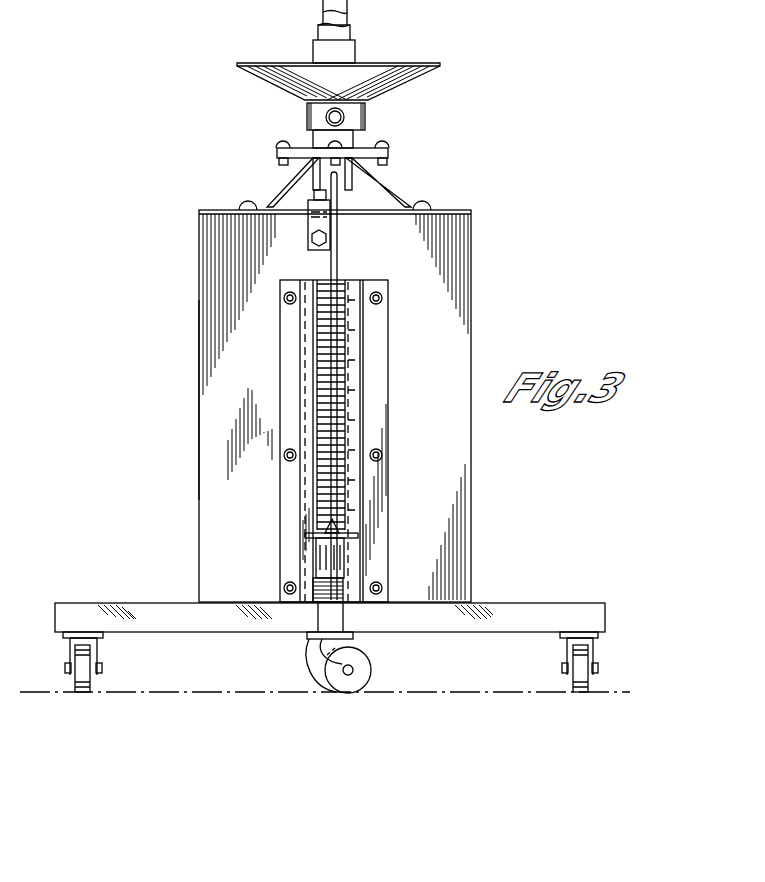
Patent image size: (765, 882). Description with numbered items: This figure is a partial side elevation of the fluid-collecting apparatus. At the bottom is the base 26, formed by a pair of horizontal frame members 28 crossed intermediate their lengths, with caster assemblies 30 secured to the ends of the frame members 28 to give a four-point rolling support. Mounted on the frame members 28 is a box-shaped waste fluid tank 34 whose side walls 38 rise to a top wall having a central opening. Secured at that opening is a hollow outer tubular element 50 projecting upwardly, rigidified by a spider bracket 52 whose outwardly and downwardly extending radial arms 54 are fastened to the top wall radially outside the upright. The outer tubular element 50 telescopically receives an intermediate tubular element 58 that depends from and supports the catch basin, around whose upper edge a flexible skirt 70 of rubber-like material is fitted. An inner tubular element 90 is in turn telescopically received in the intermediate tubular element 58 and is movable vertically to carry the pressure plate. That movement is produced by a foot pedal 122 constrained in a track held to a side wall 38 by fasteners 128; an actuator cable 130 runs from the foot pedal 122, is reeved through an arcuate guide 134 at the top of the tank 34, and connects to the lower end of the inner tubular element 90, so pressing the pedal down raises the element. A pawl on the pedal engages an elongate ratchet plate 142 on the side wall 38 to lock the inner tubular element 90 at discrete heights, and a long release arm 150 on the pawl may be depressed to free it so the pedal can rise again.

The base 26 is at (414, 637).
The horizontal frame members 28 is at (318, 622).
The caster assemblies 30 is at (88, 693).
The waste fluid tank 34 is at (475, 266).
The side walls 38 is at (207, 398).
The outer tubular element 50 is at (356, 48).
The spider bracket 52 is at (398, 180).
The radial arms 54 is at (278, 190).
The intermediate tubular element 58 is at (318, 30).
The flexible skirt 70 is at (170, 0).
The inner tubular element 90 is at (350, 8).
The foot pedal 122 is at (305, 538).
The fasteners 128 is at (284, 300).
The actuator cable 130 is at (338, 262).
The arcuate guide 134 is at (335, 190).
The ratchet plate 142 is at (320, 340).
The release arm 150 is at (318, 522).